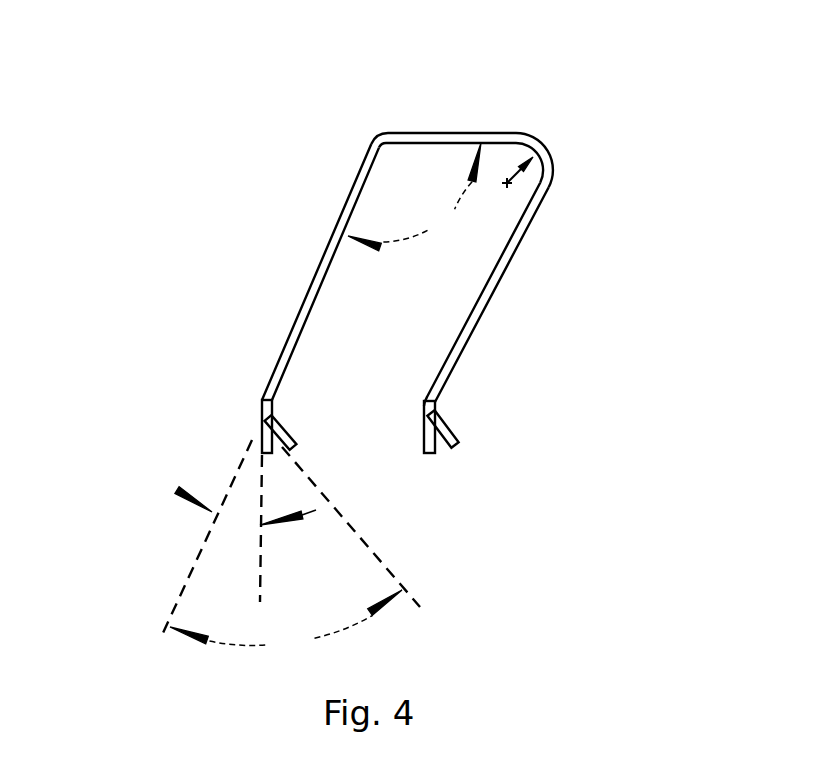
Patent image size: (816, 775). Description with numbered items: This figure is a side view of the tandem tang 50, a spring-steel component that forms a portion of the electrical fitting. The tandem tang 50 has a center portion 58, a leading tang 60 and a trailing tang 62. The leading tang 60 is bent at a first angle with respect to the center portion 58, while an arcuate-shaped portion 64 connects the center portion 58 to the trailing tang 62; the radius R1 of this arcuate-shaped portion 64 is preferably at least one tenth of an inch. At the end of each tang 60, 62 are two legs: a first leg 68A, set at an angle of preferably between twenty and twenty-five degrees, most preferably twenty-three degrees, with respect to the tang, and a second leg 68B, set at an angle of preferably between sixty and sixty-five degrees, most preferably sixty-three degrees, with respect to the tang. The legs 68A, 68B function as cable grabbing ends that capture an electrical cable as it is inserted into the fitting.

The tandem tang 50 is at (224, 172).
The center portion 58 is at (448, 132).
The leading tang 60 is at (313, 271).
The trailing tang 62 is at (486, 308).
The arcuate-shaped portion 64 is at (533, 140).
The radius of the arcuate-shaped portion R1 is at (517, 173).
The first leg 68A is at (262, 440).
The second leg 68B is at (290, 424).